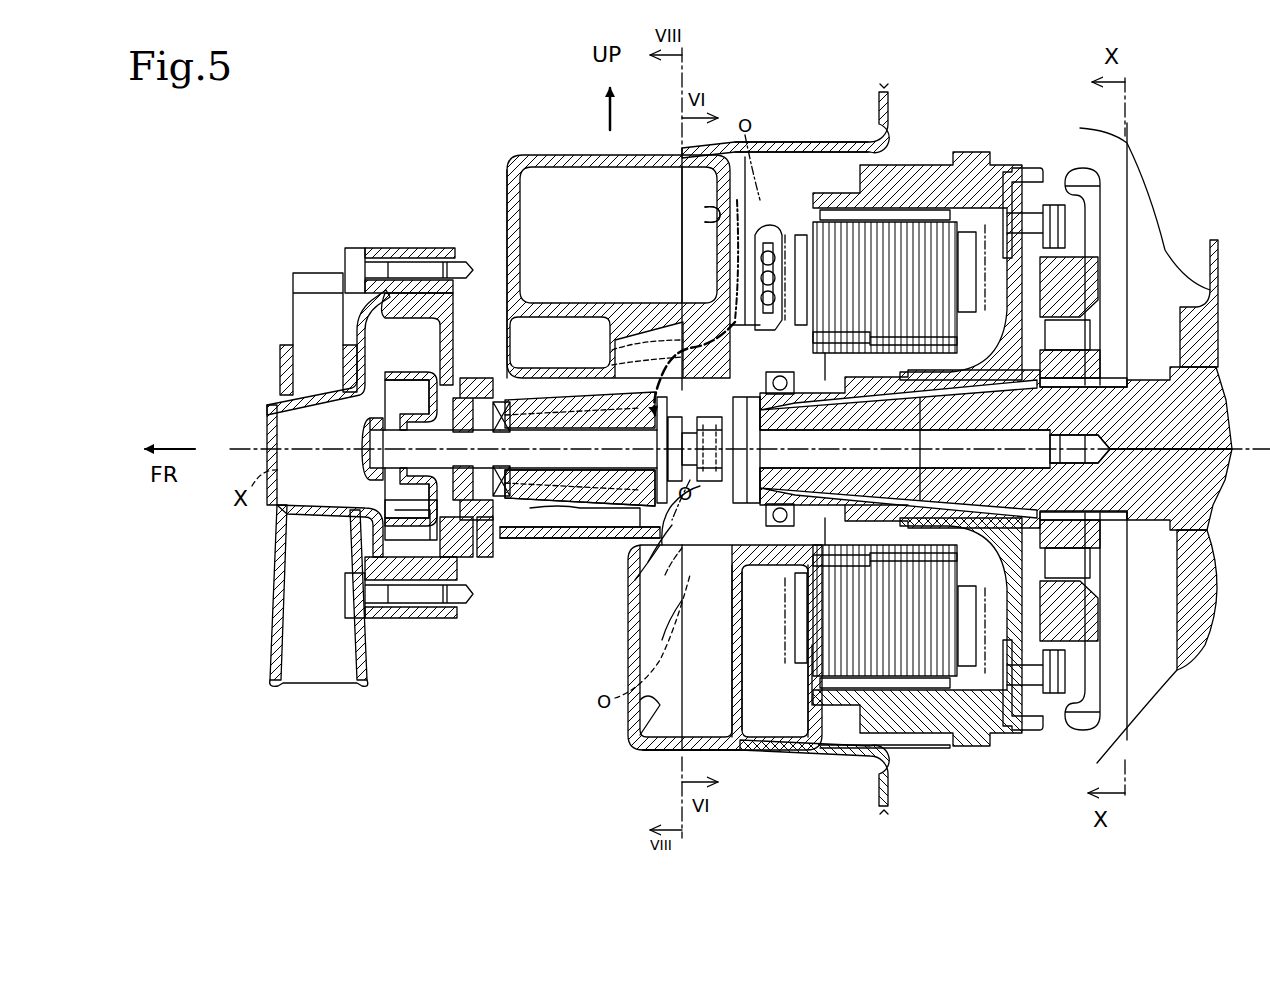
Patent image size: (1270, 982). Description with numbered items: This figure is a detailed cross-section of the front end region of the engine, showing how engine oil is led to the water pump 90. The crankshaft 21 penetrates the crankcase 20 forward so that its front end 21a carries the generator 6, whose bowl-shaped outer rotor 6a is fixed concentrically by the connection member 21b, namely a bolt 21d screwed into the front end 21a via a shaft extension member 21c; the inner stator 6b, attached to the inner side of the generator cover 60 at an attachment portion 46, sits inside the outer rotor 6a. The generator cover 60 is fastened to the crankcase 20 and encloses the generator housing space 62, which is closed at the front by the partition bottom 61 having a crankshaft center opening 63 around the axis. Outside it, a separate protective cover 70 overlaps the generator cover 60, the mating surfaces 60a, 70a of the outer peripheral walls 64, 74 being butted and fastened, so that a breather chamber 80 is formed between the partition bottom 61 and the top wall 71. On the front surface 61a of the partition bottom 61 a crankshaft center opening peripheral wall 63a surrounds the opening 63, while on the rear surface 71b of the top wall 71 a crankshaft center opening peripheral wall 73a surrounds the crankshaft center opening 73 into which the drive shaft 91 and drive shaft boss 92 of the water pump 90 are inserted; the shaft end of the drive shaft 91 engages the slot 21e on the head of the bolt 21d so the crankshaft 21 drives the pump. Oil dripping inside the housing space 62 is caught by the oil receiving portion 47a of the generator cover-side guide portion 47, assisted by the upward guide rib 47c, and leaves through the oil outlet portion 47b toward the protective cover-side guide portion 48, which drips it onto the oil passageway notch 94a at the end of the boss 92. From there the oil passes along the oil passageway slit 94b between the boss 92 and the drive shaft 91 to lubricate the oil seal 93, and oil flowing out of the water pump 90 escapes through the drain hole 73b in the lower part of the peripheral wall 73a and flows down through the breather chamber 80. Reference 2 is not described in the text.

The electric motor 2 is at (1122, 722).
The generator 6 is at (797, 228).
The outer rotor 6a is at (920, 740).
The inner stator 6b is at (810, 650).
The crankcase 20 is at (1177, 647).
The crankshaft 21 is at (1144, 390).
The front end 21a is at (885, 560).
The connection member 21b is at (668, 630).
The shaft extension member 21c is at (822, 655).
The bolt 21d is at (670, 580).
The slot 21e is at (640, 585).
The attachment portion 46 is at (770, 575).
The generator cover-side guide portion 47 is at (880, 320).
The oil receiving portion 47a is at (820, 320).
The oil outlet portion 47b is at (745, 320).
The guide rib 47c is at (840, 320).
The protective cover-side guide portion 48 is at (677, 325).
The generator cover 60 is at (833, 142).
The mating surface 60a is at (685, 178).
The partition bottom 61 is at (745, 650).
The front surface 61a is at (737, 680).
The generator housing space 62 is at (812, 178).
The crankshaft center opening 63 is at (718, 432).
The crankshaft center opening peripheral wall 63a is at (675, 590).
The outer peripheral wall 64 is at (718, 755).
The protective cover 70 is at (566, 155).
The mating surface 70a is at (688, 215).
The top wall 71 is at (503, 340).
The rear surface 71b is at (645, 705).
The crankshaft center opening 73 is at (605, 525).
The crankshaft center opening peripheral wall 73a is at (680, 352).
The drain hole 73b is at (625, 540).
The outer peripheral wall 74 is at (660, 752).
The breather chamber 80 is at (719, 668).
The water pump 90 is at (410, 222).
The drive shaft 91 is at (600, 440).
The drive shaft boss 92 is at (580, 398).
The oil seal 93 is at (515, 385).
The oil passageway notch 94a is at (665, 415).
The oil passageway slit 94b is at (580, 479).